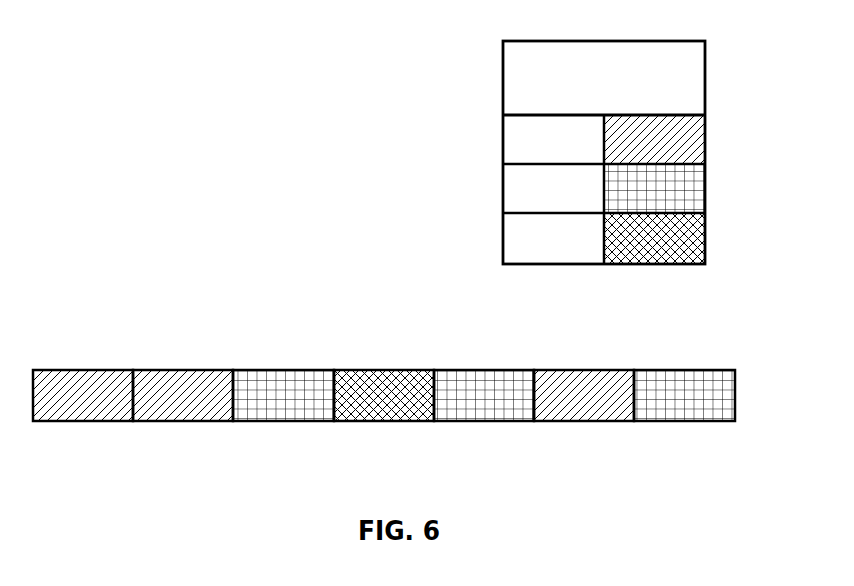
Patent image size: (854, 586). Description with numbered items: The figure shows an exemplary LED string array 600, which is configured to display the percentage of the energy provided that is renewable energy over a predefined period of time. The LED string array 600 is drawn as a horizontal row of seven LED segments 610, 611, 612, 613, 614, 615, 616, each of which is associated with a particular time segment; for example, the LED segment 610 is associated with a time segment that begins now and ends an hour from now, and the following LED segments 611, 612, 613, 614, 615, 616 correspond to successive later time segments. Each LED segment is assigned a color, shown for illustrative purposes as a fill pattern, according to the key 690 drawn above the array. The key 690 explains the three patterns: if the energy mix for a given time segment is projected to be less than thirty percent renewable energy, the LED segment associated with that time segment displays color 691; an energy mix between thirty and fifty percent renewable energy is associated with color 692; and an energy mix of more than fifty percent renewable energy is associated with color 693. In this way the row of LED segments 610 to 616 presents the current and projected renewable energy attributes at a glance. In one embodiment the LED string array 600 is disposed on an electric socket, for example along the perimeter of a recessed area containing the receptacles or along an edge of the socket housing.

The LED string array 600 is at (203, 208).
The LED segment 610 is at (70, 370).
The LED segment 611 is at (173, 370).
The LED segment 612 is at (273, 370).
The LED segment 613 is at (377, 370).
The LED segment 614 is at (482, 370).
The LED segment 615 is at (582, 370).
The LED segment 616 is at (670, 370).
The key 690 is at (583, 101).
The color 691 is at (705, 134).
The color 692 is at (705, 188).
The color 693 is at (705, 242).